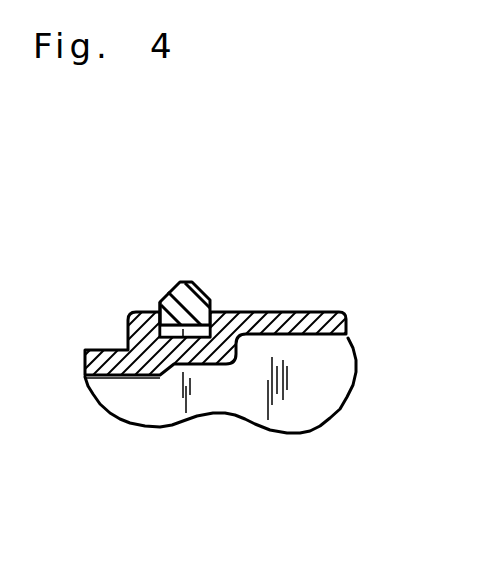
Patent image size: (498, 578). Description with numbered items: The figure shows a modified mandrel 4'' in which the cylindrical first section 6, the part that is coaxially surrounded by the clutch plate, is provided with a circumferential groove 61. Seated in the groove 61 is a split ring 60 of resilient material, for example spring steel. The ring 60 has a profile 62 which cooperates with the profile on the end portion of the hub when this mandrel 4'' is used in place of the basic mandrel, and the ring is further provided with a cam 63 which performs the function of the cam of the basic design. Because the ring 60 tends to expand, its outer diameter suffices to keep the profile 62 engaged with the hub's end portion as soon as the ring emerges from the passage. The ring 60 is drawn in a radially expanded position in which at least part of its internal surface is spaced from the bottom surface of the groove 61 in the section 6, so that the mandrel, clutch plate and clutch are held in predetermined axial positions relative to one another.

The mandrel 4'' is at (269, 378).
The first section 6 is at (308, 310).
The split ring 60 is at (186, 283).
The circumferential groove 61 is at (172, 336).
The profile 62 is at (190, 292).
The cam 63 is at (167, 296).